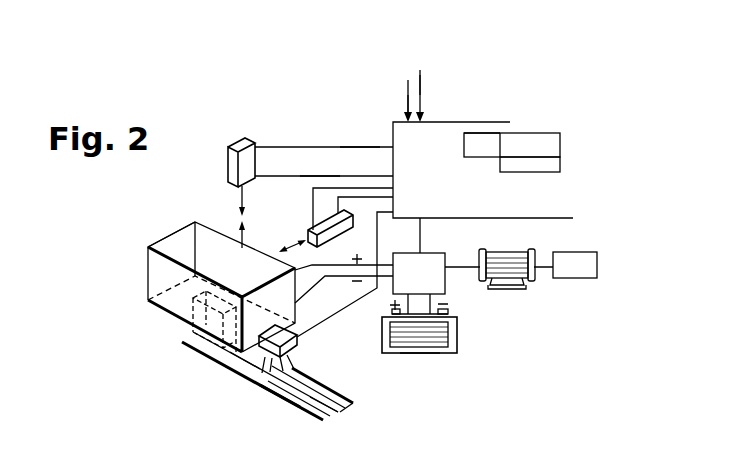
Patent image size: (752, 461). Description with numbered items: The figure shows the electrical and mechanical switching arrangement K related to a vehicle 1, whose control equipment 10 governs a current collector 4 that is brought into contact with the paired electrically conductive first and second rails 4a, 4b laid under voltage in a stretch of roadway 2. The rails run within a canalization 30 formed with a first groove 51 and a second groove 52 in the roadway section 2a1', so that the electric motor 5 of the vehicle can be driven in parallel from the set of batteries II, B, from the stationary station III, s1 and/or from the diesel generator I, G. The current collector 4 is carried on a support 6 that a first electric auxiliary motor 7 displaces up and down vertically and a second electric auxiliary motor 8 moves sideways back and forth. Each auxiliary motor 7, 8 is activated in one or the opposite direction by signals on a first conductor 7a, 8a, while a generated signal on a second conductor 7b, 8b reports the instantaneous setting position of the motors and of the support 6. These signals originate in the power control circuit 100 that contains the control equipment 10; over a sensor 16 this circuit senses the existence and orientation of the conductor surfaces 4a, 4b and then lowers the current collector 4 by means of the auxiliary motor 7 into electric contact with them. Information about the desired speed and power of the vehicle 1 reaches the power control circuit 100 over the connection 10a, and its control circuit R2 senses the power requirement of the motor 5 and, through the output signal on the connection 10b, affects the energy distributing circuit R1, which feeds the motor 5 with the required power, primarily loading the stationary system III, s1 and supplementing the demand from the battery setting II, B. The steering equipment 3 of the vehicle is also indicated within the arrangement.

The vehicle 1 is at (253, 134).
The first electric auxiliary motor 7 is at (227, 158).
The first conductor 7a is at (333, 176).
The second conductor 7b is at (368, 147).
The power control circuit 100 is at (465, 121).
The diesel generator G is at (406, 85).
The first vehicle related power source I is at (422, 84).
The connection or conductor 10a is at (385, 107).
The control circuit for energy distribution R2 is at (542, 132).
The steering equipment 3 is at (488, 148).
The control equipment 10 is at (553, 165).
The first conductor 8a is at (314, 201).
The second conductor 8b is at (377, 204).
The second electric auxiliary motor 8 is at (304, 231).
The sensor 16 is at (302, 336).
The stationary station s1 is at (304, 382).
The connection or conductor 10b is at (421, 243).
The energy distributing circuit R1 is at (445, 283).
The electric motor 5 is at (504, 252).
The set of batteries B is at (457, 335).
The second vehicle related power source II is at (420, 367).
The support 6 is at (211, 259).
The switching arrangement K is at (171, 226).
The roadway 2 is at (190, 344).
The current collector 4 is at (195, 333).
The first rail 4a is at (251, 376).
The second rail 4b is at (320, 395).
The canalization 30 is at (287, 393).
The roadway section 2a1' is at (371, 417).
The first groove 51 is at (323, 432).
The second groove 52 is at (324, 404).
The third power source III is at (209, 377).